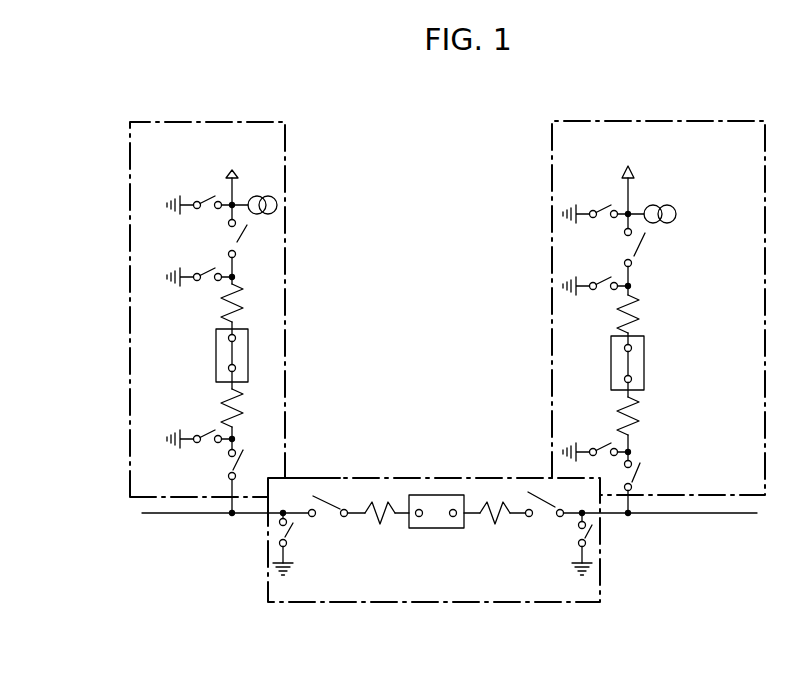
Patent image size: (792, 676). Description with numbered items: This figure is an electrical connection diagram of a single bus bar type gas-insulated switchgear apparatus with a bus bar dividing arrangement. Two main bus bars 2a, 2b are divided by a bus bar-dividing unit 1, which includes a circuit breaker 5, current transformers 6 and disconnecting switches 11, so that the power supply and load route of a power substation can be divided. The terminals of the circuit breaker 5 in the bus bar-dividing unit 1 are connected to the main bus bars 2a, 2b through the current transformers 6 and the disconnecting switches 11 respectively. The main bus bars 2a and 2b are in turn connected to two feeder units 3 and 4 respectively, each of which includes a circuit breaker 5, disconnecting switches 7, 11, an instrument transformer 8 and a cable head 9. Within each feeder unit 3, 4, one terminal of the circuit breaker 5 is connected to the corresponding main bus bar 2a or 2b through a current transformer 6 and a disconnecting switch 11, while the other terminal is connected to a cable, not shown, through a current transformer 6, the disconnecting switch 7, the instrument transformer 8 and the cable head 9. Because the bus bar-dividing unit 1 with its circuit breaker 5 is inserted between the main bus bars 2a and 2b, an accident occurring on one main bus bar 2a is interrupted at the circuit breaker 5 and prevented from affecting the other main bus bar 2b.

The bus bar-dividing unit 1 is at (585, 585).
The main bus bar 2a is at (190, 517).
The main bus bar 2b is at (702, 517).
The feeder unit 3 is at (184, 140).
The feeder unit 4 is at (682, 145).
The circuit breaker 5 is at (248, 350).
The current transformer 6 is at (238, 298).
The disconnecting switch 7 is at (248, 238).
The instrument transformer 8 is at (282, 198).
The cable head 9 is at (237, 168).
The disconnecting switch 11 is at (245, 460).